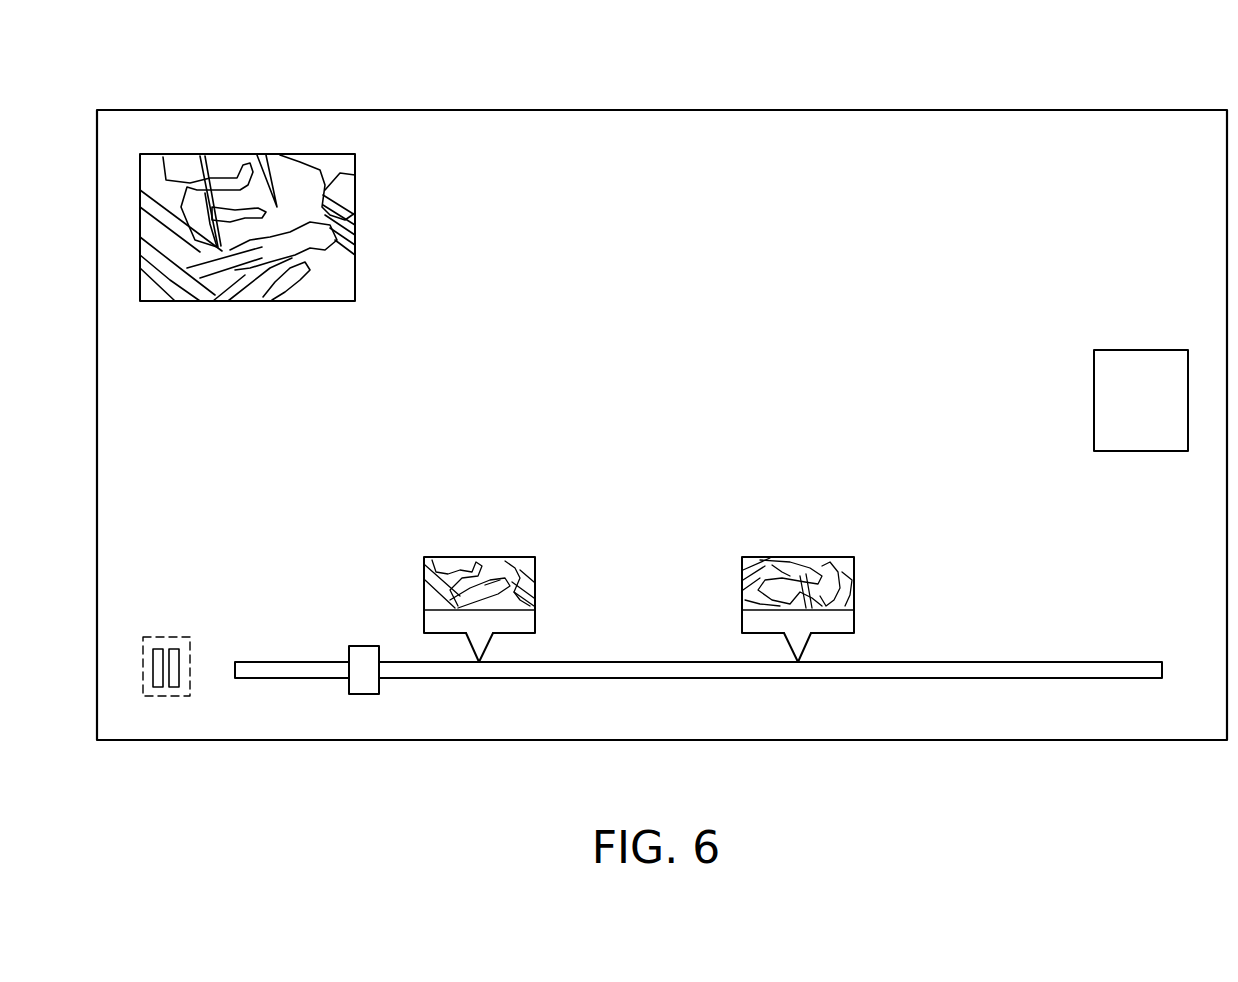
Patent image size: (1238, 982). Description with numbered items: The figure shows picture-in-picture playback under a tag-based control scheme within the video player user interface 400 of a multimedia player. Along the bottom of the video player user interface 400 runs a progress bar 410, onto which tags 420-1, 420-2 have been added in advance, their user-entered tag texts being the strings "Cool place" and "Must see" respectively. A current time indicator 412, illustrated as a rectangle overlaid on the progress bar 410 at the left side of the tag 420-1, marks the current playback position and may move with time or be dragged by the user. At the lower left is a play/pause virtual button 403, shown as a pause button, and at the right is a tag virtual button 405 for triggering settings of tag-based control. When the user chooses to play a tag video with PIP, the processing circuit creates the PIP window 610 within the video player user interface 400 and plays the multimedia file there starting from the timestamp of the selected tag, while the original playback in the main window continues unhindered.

The video player user interface 400 is at (660, 110).
The PIP window 610 is at (247, 154).
The tag virtual button 405 is at (1139, 350).
The play/pause virtual button 403 is at (163, 637).
The progress bar 410 is at (290, 662).
The current time indicator 412 is at (362, 646).
The tag 420-1 is at (503, 557).
The tag 420-2 is at (819, 557).